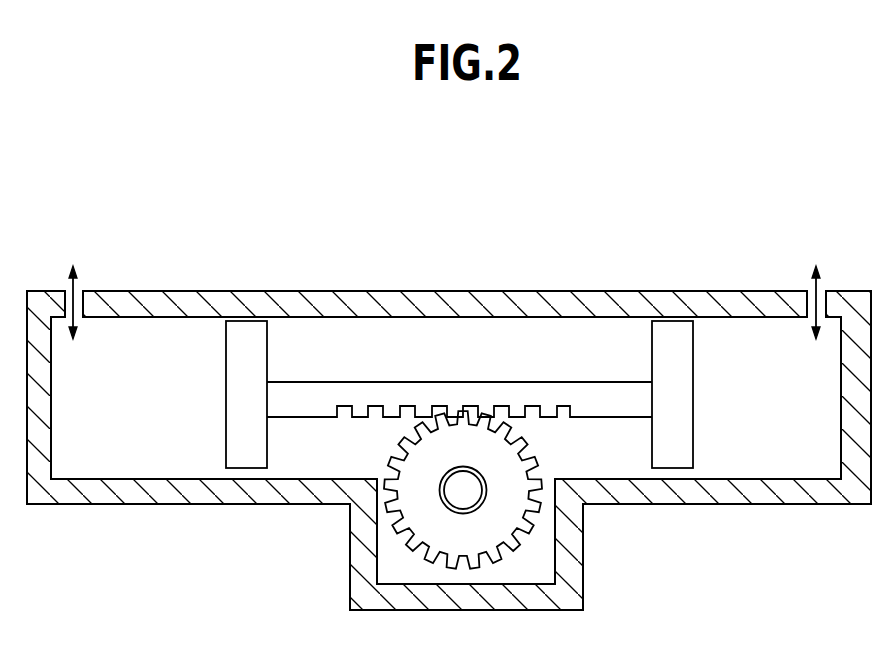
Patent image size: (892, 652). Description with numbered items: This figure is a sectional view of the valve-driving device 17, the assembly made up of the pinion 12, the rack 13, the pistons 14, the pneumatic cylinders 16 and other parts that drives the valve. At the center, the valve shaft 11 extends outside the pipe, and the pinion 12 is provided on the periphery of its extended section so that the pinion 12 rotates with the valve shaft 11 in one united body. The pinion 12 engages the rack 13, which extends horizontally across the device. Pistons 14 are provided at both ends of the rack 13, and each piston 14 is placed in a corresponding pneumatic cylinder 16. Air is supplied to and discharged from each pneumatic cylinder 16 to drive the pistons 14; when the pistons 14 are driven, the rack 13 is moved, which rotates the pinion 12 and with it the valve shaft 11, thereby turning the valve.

The valve shaft 11 is at (477, 495).
The pinion 12 is at (415, 513).
The rack 13 is at (403, 390).
The pistons 14 is at (234, 377).
The pneumatic cylinder 16 is at (120, 490).
The valve-driving device 17 is at (207, 238).